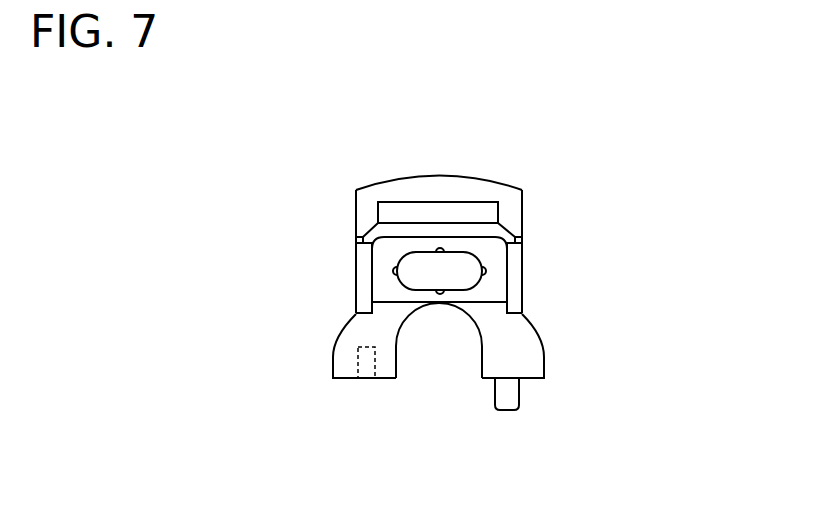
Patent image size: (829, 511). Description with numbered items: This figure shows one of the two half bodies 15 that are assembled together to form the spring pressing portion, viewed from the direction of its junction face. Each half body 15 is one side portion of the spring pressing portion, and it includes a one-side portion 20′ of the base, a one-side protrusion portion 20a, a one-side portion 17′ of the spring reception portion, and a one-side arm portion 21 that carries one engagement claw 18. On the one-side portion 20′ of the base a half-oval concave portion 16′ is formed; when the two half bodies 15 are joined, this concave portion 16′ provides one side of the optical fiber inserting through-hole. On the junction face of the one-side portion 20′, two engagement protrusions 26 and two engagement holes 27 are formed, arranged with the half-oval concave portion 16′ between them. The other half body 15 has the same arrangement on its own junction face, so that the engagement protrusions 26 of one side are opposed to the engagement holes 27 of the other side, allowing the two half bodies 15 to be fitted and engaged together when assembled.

The half body 15 is at (557, 117).
The engagement claw 18 is at (400, 210).
The one-side portion of the base 20′ is at (440, 183).
The one-side protrusion portion 20a is at (484, 177).
The one-side arm portion 21 is at (523, 269).
The half-oval concave portion 16′ is at (460, 312).
The one-side portion of the spring reception portion 17′ is at (487, 367).
The engagement hole 27 is at (367, 378).
The engagement protrusion 26 is at (510, 394).